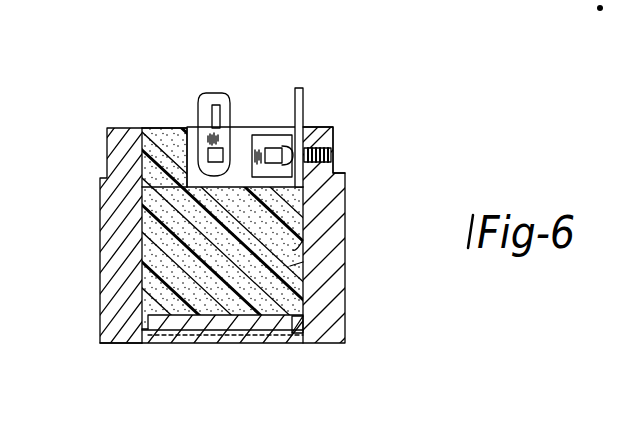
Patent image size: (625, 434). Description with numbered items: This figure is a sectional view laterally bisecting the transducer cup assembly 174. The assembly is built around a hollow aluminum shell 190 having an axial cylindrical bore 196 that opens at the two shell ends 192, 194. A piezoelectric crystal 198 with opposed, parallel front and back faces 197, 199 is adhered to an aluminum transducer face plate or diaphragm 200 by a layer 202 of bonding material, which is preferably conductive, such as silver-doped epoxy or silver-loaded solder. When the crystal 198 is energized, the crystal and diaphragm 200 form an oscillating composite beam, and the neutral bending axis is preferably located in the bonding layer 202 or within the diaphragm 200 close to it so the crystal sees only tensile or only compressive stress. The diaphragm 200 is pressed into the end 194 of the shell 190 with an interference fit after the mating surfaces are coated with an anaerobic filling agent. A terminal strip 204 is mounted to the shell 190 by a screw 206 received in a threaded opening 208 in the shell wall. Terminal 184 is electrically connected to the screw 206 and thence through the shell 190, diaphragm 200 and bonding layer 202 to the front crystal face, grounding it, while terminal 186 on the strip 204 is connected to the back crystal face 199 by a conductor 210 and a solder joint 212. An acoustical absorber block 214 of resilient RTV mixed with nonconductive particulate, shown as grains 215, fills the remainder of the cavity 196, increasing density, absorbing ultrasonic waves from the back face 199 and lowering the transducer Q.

The transducer cup assembly 174 is at (100, 273).
The terminal 184 is at (303, 99).
The terminal 186 is at (212, 93).
The hollow aluminum shell 190 is at (333, 328).
The shell end 192 is at (163, 128).
The shell end 194 is at (113, 343).
The axial cylindrical bore 196 is at (303, 240).
The front crystal face 197 is at (167, 330).
The piezoelectric crystal 198 is at (300, 323).
The back crystal face 199 is at (303, 262).
The transducer face plate or diaphragm 200 is at (273, 343).
The layer of bonding material 202 is at (295, 342).
The terminal strip 204 is at (258, 135).
The screw 206 is at (281, 147).
The threaded opening 208 is at (331, 153).
The conductor 210 is at (193, 190).
The solder joint 212 is at (164, 306).
The acoustical absorber block 214 is at (170, 188).
The grains 215 is at (188, 295).